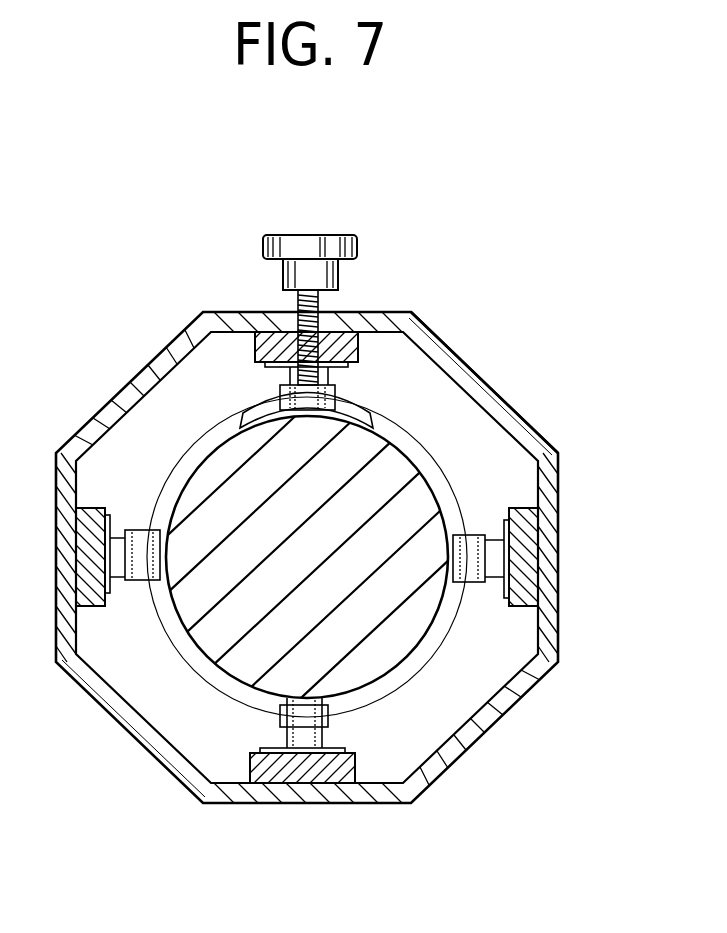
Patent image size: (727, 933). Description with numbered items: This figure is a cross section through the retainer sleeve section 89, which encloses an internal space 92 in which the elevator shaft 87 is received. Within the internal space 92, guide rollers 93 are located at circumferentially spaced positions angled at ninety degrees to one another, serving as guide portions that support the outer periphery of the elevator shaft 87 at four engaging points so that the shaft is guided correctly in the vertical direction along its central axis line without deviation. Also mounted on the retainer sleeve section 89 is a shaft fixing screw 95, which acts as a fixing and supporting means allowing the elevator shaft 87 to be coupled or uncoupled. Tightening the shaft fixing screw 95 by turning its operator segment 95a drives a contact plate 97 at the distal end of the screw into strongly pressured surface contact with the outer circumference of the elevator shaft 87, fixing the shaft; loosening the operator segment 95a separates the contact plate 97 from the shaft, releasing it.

The elevator shaft 87 is at (240, 663).
The retainer sleeve section 89 is at (463, 753).
The internal space 92 is at (463, 413).
The guide roller 93 is at (113, 580).
The shaft fixing screw 95 is at (373, 256).
The operator segment 95a is at (310, 247).
The contact plate 97 is at (370, 410).